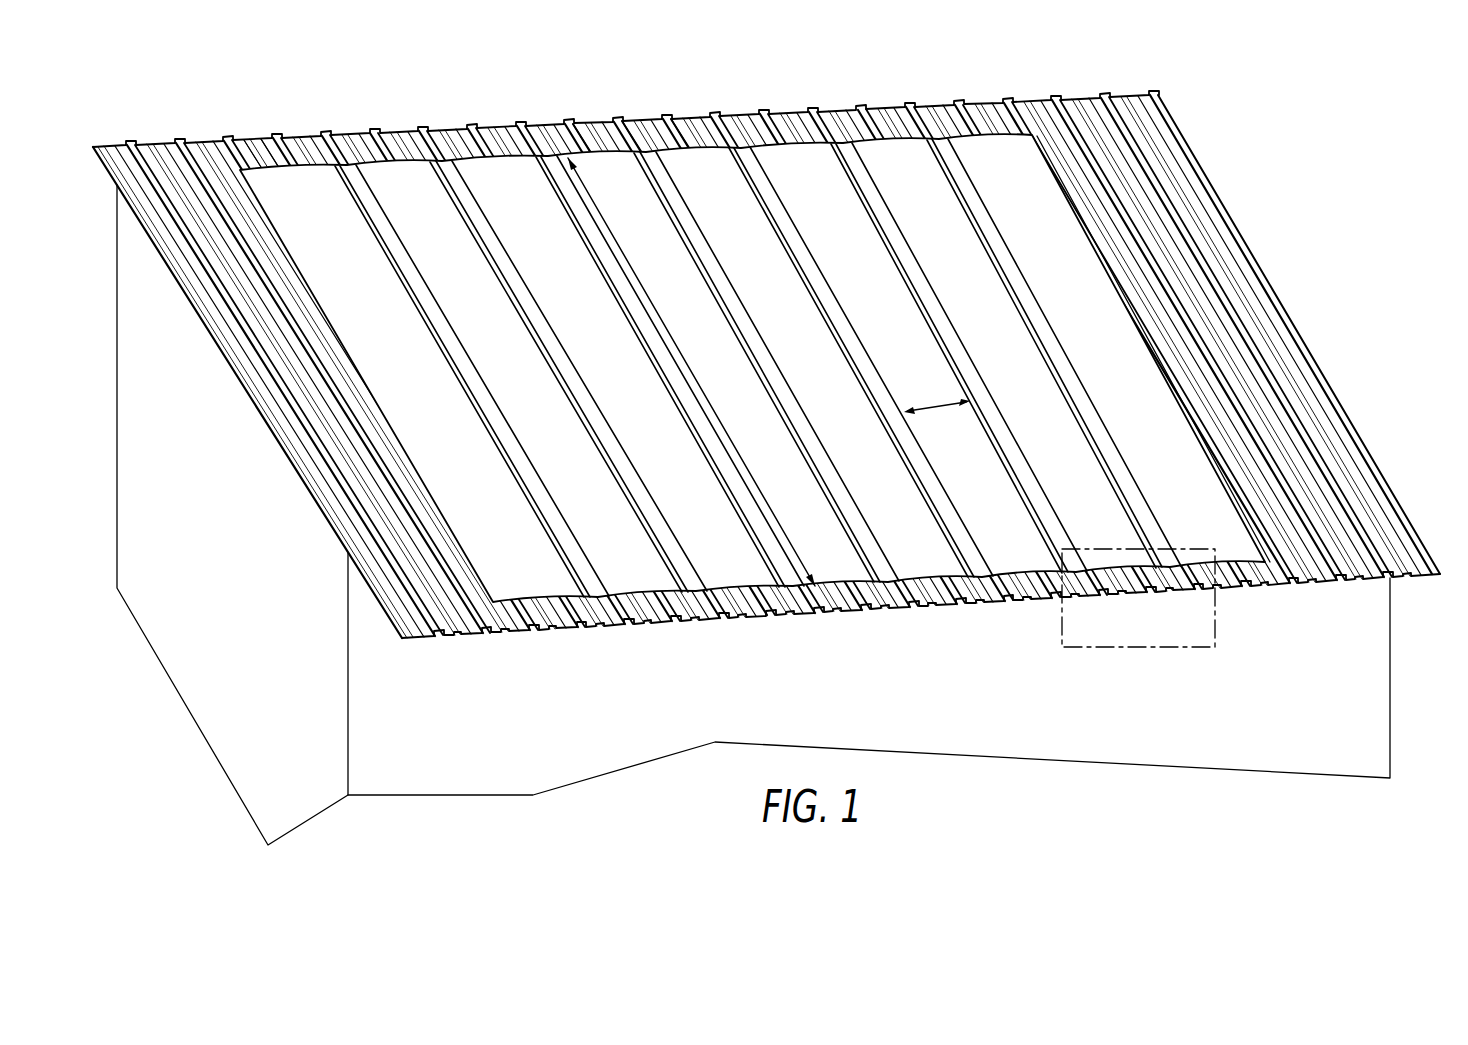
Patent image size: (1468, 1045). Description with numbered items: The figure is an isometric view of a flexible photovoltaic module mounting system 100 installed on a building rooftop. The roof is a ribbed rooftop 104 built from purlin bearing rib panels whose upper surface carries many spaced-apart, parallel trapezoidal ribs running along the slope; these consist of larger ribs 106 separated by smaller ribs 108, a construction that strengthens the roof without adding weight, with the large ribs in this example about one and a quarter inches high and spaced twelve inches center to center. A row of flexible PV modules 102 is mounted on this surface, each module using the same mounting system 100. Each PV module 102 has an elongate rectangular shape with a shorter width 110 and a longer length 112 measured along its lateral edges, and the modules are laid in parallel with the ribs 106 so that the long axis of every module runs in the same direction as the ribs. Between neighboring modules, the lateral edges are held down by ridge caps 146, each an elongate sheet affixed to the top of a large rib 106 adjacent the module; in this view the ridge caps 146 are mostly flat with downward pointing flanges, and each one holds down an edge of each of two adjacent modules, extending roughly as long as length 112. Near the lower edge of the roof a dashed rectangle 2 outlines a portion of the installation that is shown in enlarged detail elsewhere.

The flexible photovoltaic module mounting system 100 is at (395, 93).
The flexible PV module 102 is at (794, 148).
The ribbed rooftop 104 is at (1226, 232).
The larger ribs 106 is at (576, 120).
The smaller ribs 108 is at (241, 137).
The width 110 is at (946, 412).
The length 112 is at (690, 366).
The ridge cap 146 is at (851, 140).
The detail region of FIG. 2 is at (1158, 650).